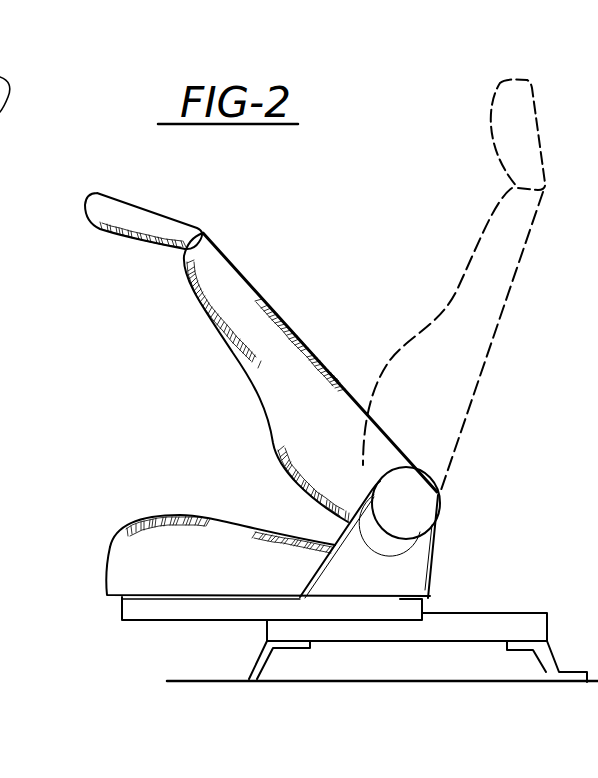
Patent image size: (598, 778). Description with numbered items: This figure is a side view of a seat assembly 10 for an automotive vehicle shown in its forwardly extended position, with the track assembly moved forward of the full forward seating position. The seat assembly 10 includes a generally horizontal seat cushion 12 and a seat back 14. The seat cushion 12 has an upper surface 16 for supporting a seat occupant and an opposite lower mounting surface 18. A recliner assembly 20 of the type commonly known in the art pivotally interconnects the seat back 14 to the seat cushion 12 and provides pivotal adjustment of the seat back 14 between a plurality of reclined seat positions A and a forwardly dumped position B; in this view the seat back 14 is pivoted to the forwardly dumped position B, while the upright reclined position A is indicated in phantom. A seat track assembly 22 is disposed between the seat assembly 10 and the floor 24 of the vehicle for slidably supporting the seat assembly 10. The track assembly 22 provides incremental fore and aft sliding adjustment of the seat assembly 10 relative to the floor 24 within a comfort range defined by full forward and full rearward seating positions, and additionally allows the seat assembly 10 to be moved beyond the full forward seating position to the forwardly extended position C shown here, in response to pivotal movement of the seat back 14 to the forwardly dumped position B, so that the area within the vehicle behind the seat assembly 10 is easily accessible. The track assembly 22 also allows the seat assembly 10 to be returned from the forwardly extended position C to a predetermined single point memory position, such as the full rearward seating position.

The seat assembly 10 is at (353, 153).
The seat cushion 12 is at (113, 545).
The seat back 14 is at (256, 288).
The upper surface 16 is at (180, 514).
The lower mounting surface 18 is at (112, 602).
The recliner assembly 20 is at (441, 510).
The seat track assembly 22 is at (369, 641).
The floor 24 is at (178, 677).
The reclined seat positions A is at (499, 100).
The forwardly dumped position B is at (117, 196).
The forwardly extended position C is at (108, 568).